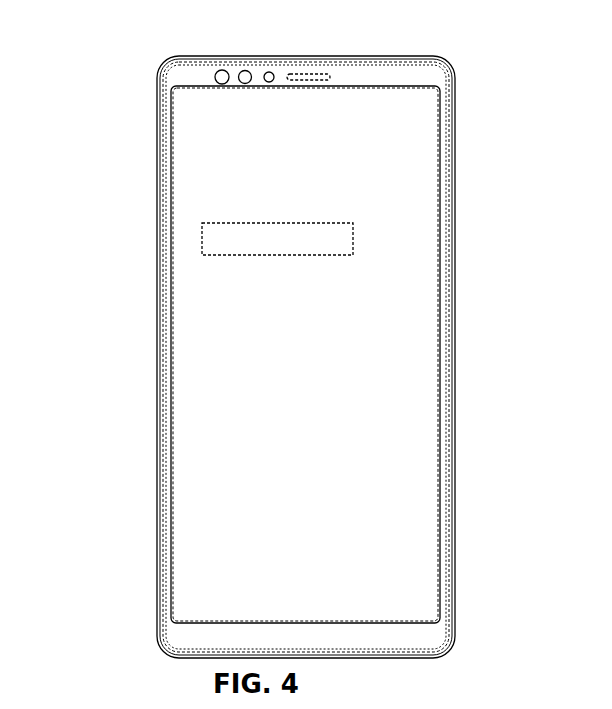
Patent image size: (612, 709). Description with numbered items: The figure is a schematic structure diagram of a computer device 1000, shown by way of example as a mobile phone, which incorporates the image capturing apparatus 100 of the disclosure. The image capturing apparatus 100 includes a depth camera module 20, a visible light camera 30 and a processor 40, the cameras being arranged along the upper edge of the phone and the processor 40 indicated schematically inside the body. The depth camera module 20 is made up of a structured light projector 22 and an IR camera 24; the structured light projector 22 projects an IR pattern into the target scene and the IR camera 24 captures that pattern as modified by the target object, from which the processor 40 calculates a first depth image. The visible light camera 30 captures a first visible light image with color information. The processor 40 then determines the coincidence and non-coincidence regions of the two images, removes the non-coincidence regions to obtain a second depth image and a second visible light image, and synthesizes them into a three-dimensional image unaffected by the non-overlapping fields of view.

The computer device 1000 is at (313, 43).
The image capturing apparatus 100 is at (119, 98).
The depth camera module 20 is at (160, 13).
The structured light projector 22 is at (260, 57).
The IR camera 24 is at (215, 79).
The visible light camera 30 is at (238, 87).
The processor 40 is at (202, 237).